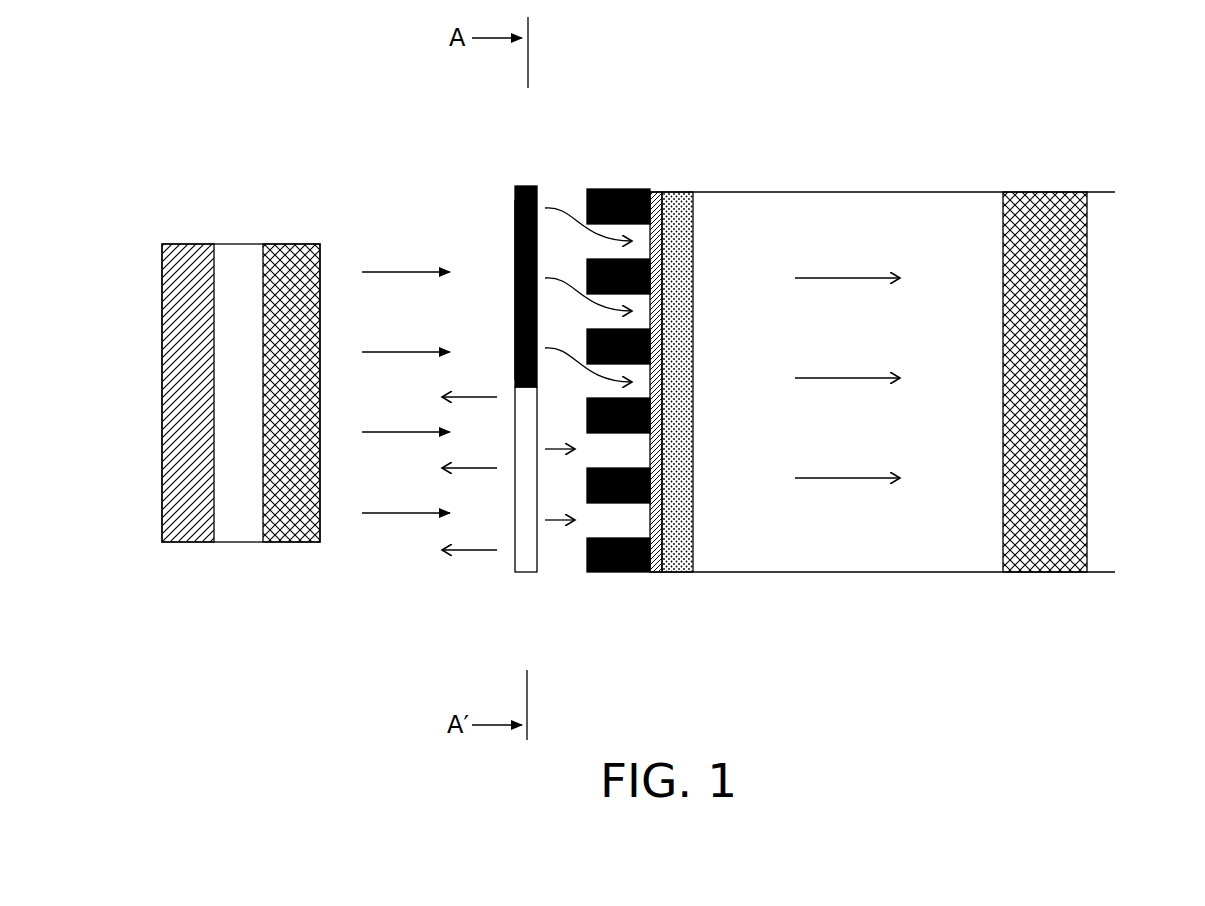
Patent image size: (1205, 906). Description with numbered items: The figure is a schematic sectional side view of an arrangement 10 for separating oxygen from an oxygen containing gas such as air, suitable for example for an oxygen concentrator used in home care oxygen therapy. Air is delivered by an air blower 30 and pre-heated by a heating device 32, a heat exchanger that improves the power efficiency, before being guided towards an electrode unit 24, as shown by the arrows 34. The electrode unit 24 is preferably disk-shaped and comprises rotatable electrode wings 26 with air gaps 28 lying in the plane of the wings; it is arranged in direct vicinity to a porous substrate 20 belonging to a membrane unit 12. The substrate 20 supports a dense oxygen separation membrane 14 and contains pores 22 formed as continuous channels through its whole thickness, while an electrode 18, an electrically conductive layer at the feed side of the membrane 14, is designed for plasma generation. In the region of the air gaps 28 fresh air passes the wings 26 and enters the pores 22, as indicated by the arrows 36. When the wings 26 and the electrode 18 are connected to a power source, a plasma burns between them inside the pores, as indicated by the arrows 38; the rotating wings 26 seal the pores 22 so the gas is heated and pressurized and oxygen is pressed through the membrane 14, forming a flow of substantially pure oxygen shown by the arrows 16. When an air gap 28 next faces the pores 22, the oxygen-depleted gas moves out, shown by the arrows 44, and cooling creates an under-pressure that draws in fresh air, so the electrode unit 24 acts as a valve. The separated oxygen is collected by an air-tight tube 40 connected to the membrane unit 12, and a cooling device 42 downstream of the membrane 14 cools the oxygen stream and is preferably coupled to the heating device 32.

The arrangement 10 is at (907, 338).
The membrane unit 12 is at (664, 170).
The membrane 14 is at (683, 590).
The arrows 16 is at (848, 278).
The electrode 18 is at (656, 575).
The porous substrate 20 is at (628, 189).
The pores 22 is at (595, 522).
The electrode unit 24 is at (528, 186).
The rotatable electrode wing 26 is at (515, 230).
The air gap 28 is at (513, 560).
The air blower 30 is at (190, 244).
The heating device 32 is at (292, 244).
The arrows 34 is at (405, 515).
The arrows 36 is at (548, 522).
The arrows 38 is at (568, 203).
The tube 40 is at (780, 192).
The cooling device 42 is at (1050, 192).
The arrows 44 is at (472, 553).